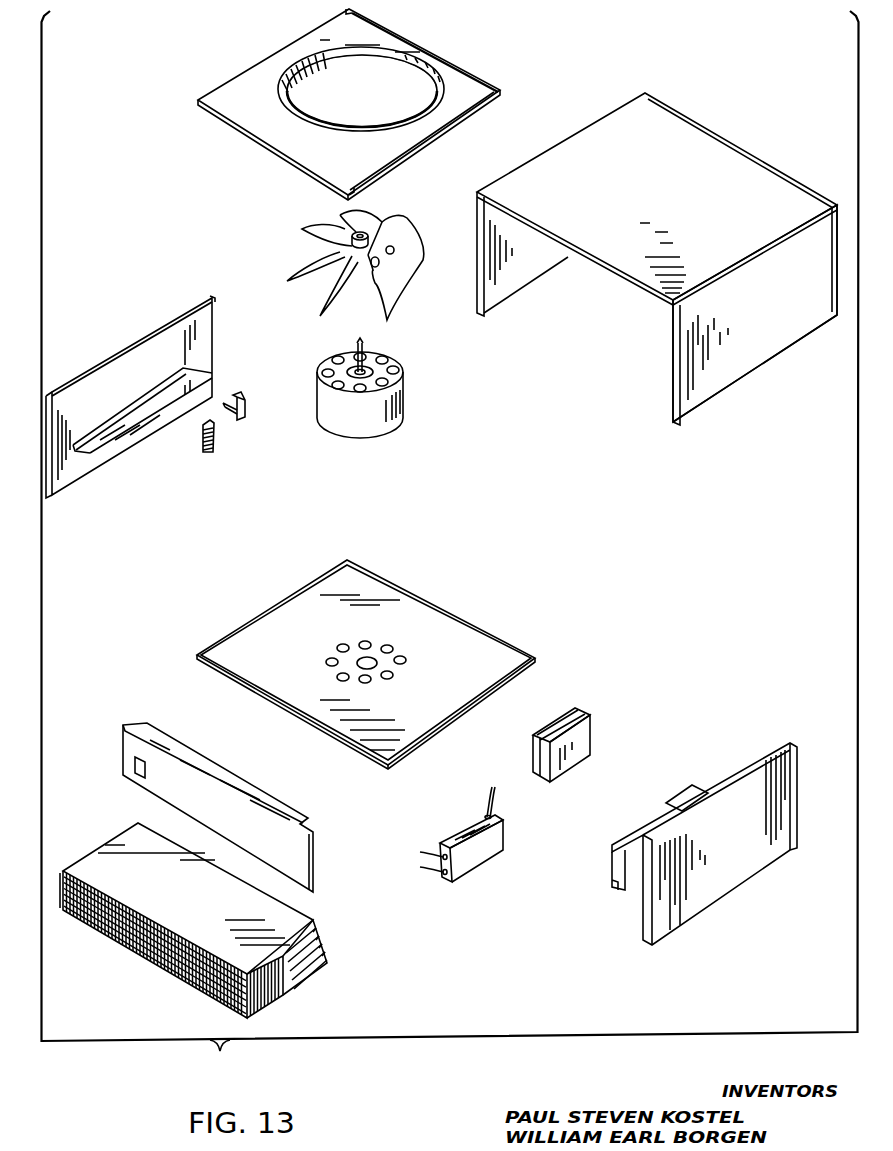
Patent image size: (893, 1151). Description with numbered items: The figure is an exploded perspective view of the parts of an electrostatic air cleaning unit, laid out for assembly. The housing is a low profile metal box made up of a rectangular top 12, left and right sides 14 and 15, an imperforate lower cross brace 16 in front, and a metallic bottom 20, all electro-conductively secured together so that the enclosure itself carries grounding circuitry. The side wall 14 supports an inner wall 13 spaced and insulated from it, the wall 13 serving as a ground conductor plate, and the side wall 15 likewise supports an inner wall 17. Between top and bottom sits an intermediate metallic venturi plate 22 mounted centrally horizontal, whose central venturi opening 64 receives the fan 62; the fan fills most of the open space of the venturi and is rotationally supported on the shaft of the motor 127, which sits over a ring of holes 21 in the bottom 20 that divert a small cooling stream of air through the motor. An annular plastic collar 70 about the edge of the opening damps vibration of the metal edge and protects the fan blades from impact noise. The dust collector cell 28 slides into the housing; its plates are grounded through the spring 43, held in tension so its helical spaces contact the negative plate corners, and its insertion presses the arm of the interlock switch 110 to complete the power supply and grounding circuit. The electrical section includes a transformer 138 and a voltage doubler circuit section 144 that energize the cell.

The rectangular top 12 is at (668, 203).
The inner wall 13 is at (142, 382).
The left side 14 is at (512, 277).
The right side 15 is at (688, 343).
The lower cross brace 16 is at (235, 819).
The inner wall 17 is at (733, 844).
The bottom 20 is at (366, 664).
The ring of holes 21 is at (402, 657).
The venturi plate 22 is at (358, 168).
The dust collector cell 28 is at (234, 902).
The spring 43 is at (215, 441).
The fan 62 is at (404, 284).
The venturi opening 64 is at (406, 93).
The annular plastic collar 70 is at (296, 66).
The interlock switch 110 is at (245, 408).
The motor 127 is at (402, 398).
The transformer 138 is at (592, 748).
The voltage doubler circuit section 144 is at (504, 838).